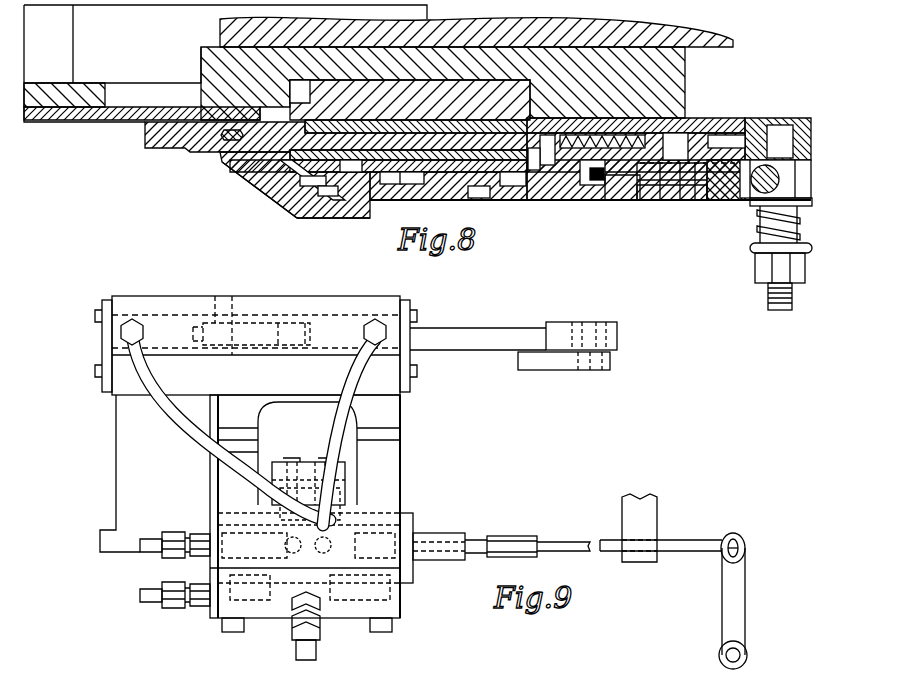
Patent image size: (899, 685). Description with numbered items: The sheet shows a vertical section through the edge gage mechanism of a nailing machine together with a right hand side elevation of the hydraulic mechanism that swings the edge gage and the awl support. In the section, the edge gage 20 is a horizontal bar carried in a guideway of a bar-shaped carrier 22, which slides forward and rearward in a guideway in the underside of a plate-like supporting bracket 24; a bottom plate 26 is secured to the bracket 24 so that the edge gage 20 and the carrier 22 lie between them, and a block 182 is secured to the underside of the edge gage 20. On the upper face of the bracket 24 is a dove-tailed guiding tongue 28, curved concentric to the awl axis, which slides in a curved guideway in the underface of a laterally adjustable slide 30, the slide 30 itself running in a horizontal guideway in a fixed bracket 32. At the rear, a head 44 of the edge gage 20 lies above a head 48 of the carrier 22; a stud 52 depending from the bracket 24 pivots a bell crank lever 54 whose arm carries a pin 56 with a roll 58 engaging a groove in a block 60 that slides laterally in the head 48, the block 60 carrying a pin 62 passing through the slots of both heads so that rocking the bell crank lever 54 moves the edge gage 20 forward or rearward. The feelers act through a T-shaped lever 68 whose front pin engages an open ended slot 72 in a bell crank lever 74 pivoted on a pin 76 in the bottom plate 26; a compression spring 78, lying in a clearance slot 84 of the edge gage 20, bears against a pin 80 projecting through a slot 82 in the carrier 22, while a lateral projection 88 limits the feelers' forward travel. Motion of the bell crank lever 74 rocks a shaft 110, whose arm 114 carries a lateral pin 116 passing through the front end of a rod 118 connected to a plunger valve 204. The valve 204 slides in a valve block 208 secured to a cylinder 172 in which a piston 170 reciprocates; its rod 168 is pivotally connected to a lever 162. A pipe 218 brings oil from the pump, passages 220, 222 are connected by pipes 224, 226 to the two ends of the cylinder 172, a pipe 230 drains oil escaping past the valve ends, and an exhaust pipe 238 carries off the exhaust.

In FIG. 8, the edge gage 20 is at (152, 136).
In FIG. 8, the carrier 22 is at (232, 168).
In FIG. 8, the supporting bracket 24 is at (312, 186).
In FIG. 8, the bottom plate 26 is at (590, 186).
In FIG. 8, the dove-tailed guiding tongue 28 is at (458, 184).
In FIG. 8, the slide 30 is at (322, 97).
In FIG. 8, the fixed bracket 32 is at (688, 82).
In FIG. 8, the head 44 is at (720, 140).
In FIG. 8, the head 48 is at (738, 202).
In FIG. 8, the stud 52 is at (780, 132).
In FIG. 8, the bell crank lever 54 is at (750, 198).
In FIG. 8, the pin 56 is at (688, 200).
In FIG. 8, the roll 58 is at (722, 196).
In FIG. 8, the block 60 is at (656, 182).
In FIG. 8, the pin 62 is at (675, 142).
In FIG. 8, the T-shaped lever 68 is at (516, 188).
In FIG. 8, the open ended slot 72 is at (352, 178).
In FIG. 8, the bell crank lever 74 is at (392, 205).
In FIG. 8, the pin 76 is at (476, 200).
In FIG. 8, the compression spring 78 is at (618, 200).
In FIG. 8, the pin 80 is at (547, 170).
In FIG. 8, the slot 82 is at (582, 160).
In FIG. 8, the clearance slot 84 is at (534, 172).
In FIG. 8, the lateral projection 88 is at (210, 152).
In FIG. 9, the shaft 110 is at (740, 655).
In FIG. 9, the arm 114 is at (738, 596).
In FIG. 9, the lateral pin 116 is at (746, 548).
In FIG. 9, the rod 118 is at (680, 548).
In FIG. 9, the lever 162 is at (563, 366).
In FIG. 9, the rod 168 is at (480, 334).
In FIG. 9, the piston 170 is at (221, 302).
In FIG. 9, the cylinder 172 is at (350, 302).
In FIG. 8, the block 182 is at (285, 205).
In FIG. 9, the plunger valve 204 is at (392, 517).
In FIG. 9, the valve block 208 is at (418, 528).
In FIG. 9, the pipe 218 is at (312, 648).
In FIG. 9, the passage 220 is at (290, 522).
In FIG. 9, the passage 222 is at (330, 488).
In FIG. 9, the pipe 224 is at (372, 423).
In FIG. 9, the pipe 226 is at (188, 416).
In FIG. 9, the pipe 230 is at (150, 593).
In FIG. 9, the exhaust pipe 238 is at (150, 543).